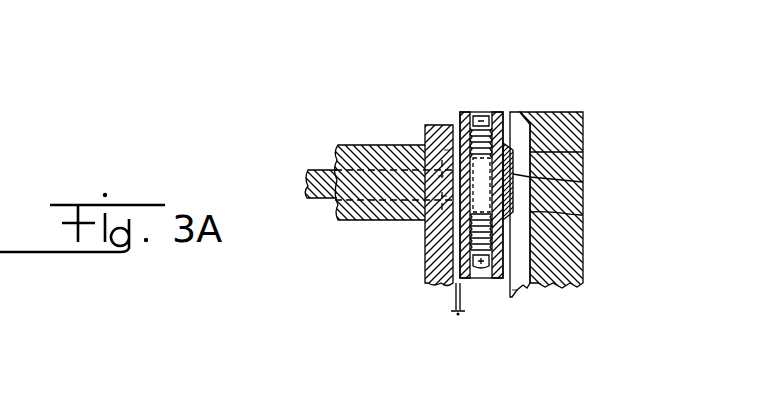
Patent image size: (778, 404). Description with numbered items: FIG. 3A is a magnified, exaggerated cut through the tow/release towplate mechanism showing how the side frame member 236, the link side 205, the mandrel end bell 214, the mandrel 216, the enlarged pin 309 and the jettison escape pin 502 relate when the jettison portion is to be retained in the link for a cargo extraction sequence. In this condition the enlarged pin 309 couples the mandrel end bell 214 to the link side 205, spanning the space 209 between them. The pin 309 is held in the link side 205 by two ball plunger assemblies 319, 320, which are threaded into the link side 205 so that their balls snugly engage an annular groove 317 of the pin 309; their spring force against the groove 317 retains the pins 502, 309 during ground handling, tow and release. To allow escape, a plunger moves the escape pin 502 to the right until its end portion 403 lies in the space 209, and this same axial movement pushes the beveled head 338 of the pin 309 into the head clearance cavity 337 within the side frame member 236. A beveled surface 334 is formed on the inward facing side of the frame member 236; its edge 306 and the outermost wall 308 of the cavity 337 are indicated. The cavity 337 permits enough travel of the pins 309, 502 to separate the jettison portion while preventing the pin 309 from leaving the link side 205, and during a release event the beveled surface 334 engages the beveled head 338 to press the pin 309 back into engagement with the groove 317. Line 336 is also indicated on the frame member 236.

The link side 205 is at (492, 188).
The space 209 is at (459, 313).
The mandrel end bell 214 is at (437, 125).
The mandrel 216 is at (350, 145).
The side frame member 236 is at (584, 113).
The edge of beveled surface 306 is at (517, 112).
The outermost wall of cavity 308 is at (583, 152).
The enlarged pin 309 is at (444, 196).
The annular groove 317 is at (448, 162).
The ball plunger assembly 319 is at (481, 114).
The ball plunger assembly 320 is at (484, 279).
The beveled surface 334 is at (531, 120).
The line 336 is at (583, 215).
The head clearance cavity 337 is at (518, 294).
The beveled head 338 is at (583, 182).
The escape pin end portion 403 is at (441, 176).
The jettison escape pin 502 is at (307, 182).